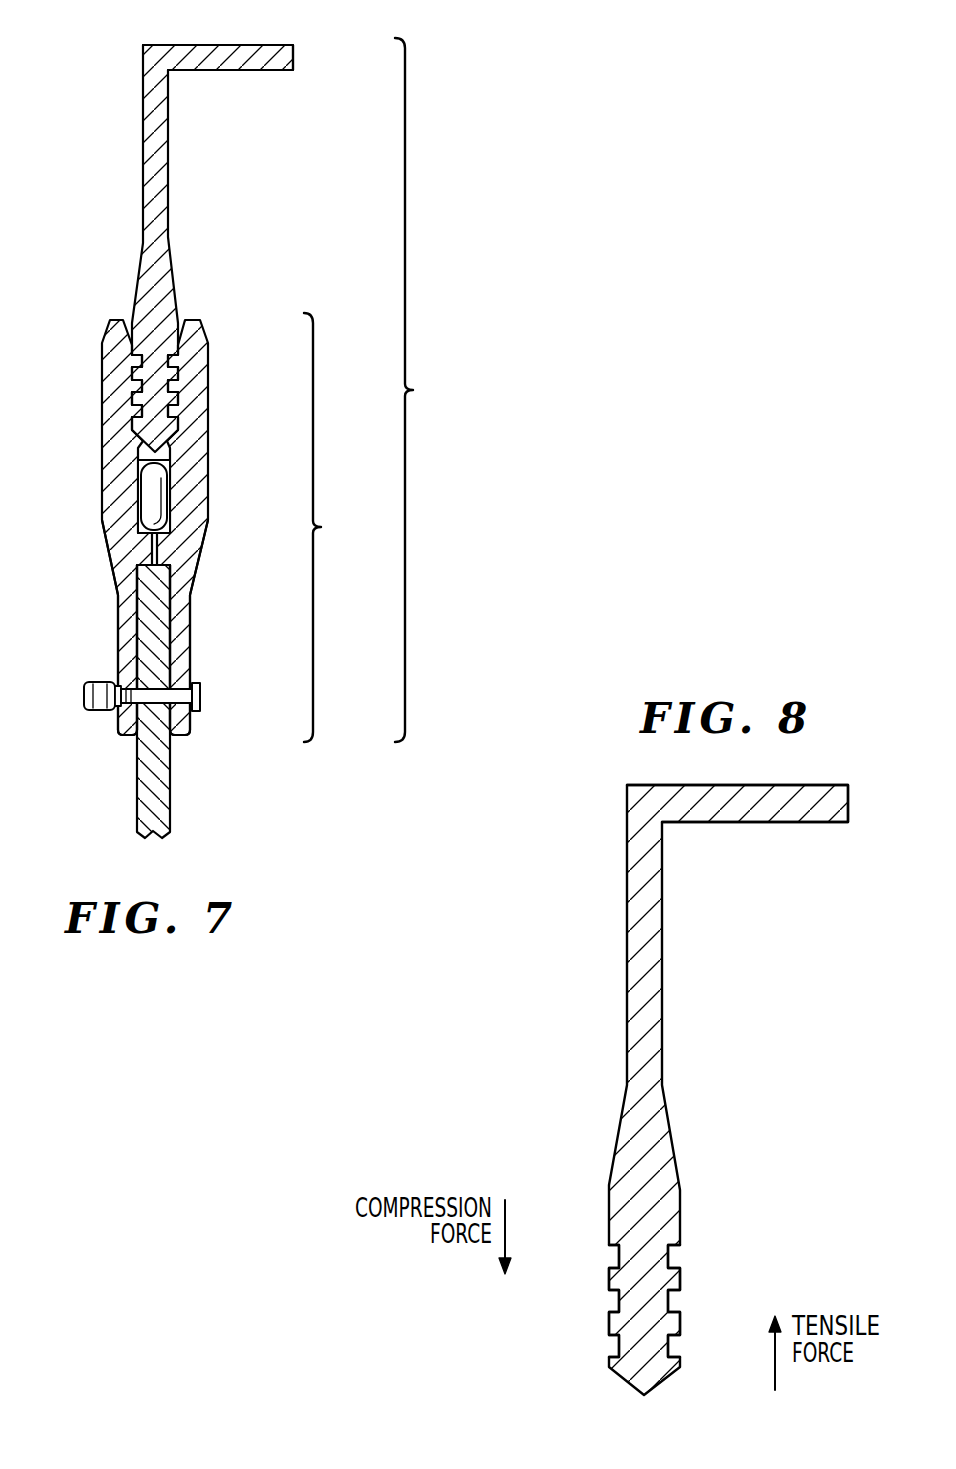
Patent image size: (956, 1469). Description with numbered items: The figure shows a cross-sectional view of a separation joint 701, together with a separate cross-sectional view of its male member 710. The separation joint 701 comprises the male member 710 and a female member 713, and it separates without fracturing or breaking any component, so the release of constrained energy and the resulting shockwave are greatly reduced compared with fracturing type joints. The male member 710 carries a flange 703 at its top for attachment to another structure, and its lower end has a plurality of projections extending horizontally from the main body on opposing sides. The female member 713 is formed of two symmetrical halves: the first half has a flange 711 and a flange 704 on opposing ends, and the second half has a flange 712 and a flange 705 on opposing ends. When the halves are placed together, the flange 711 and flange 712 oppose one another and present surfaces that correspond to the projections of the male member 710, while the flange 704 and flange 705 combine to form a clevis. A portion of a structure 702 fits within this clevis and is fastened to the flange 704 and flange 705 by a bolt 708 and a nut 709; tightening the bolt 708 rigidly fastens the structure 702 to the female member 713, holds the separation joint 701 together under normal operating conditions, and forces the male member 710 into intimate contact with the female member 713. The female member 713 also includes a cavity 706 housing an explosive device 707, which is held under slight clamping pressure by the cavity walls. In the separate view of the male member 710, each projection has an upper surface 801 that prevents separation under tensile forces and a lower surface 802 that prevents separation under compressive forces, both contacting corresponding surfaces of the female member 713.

In FIG. 7, the separation joint 701 is at (429, 390).
In FIG. 7, the structure 702 is at (162, 776).
In FIG. 7, the flange 703 is at (264, 66).
In FIG. 8, the flange 703 is at (792, 815).
In FIG. 7, the flange 704 is at (133, 600).
In FIG. 7, the flange 705 is at (180, 601).
In FIG. 7, the cavity 706 is at (140, 463).
In FIG. 7, the explosive device 707 is at (164, 486).
In FIG. 7, the bolt 708 is at (201, 696).
In FIG. 7, the nut 709 is at (84, 696).
In FIG. 7, the male member 710 is at (150, 264).
In FIG. 8, the male member 710 is at (630, 1120).
In FIG. 7, the flange 711 is at (118, 388).
In FIG. 7, the flange 712 is at (200, 395).
In FIG. 7, the female member 713 is at (339, 527).
In FIG. 8, the upper surface 801 is at (679, 1256).
In FIG. 8, the lower surface 802 is at (610, 1250).